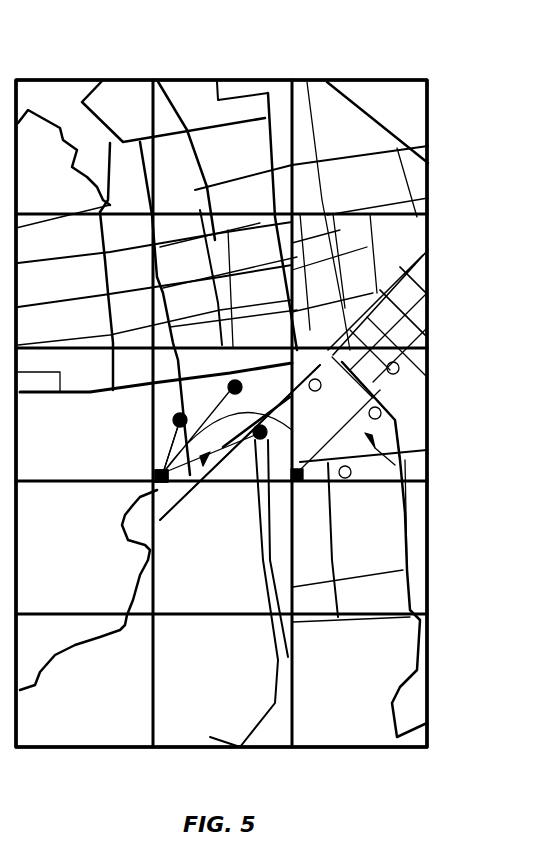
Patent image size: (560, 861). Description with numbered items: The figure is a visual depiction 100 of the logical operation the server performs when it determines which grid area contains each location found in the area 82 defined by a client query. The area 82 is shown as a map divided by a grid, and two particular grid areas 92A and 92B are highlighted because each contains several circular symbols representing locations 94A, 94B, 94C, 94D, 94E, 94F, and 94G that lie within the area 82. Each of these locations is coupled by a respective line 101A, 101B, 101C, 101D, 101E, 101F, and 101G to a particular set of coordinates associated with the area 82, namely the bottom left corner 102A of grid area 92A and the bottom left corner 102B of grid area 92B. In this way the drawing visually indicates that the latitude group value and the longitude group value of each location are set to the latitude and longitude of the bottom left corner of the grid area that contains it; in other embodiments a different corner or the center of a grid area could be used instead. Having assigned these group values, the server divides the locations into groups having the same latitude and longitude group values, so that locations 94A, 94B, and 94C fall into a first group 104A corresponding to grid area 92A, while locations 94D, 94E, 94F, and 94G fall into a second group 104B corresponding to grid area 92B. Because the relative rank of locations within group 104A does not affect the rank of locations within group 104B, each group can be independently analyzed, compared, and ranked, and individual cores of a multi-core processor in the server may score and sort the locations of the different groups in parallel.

The visual depiction 100 is at (333, 41).
The area 82 is at (221, 413).
The grid area 92A is at (195, 374).
The grid area 92B is at (338, 375).
The location 94A is at (160, 470).
The location 94B is at (232, 385).
The location 94C is at (298, 485).
The location 94D is at (427, 334).
The location 94E is at (422, 493).
The location 94F is at (402, 428).
The location 94G is at (410, 362).
The line 101A is at (158, 472).
The line 101B is at (173, 417).
The line 101C is at (258, 425).
The line 101D is at (399, 370).
The line 101E is at (345, 480).
The line 101F is at (382, 414).
The line 101G is at (322, 385).
The bottom left corner 102A is at (167, 483).
The bottom left corner 102B is at (300, 482).
The group 104A is at (206, 467).
The group 104B is at (397, 462).